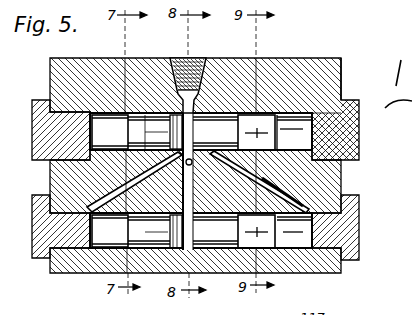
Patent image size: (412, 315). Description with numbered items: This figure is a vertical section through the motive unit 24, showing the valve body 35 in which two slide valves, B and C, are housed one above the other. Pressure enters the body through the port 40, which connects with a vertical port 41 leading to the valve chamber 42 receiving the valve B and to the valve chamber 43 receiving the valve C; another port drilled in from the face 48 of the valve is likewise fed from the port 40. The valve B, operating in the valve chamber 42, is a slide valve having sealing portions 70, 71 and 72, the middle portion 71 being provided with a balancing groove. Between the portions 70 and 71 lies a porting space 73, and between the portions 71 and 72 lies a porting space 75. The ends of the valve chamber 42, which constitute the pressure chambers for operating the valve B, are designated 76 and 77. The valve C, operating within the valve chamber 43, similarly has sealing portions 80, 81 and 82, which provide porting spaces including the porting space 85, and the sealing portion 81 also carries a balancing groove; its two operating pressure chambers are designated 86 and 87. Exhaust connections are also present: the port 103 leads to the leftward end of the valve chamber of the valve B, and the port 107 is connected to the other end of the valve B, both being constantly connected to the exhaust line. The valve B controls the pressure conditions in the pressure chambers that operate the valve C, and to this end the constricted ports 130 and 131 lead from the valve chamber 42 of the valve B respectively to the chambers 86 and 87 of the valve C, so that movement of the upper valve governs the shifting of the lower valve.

The die assembly 24 is at (357, 50).
The valve body 35 is at (333, 80).
The port 40 is at (184, 160).
The vertical port 41 is at (291, 138).
The valve chamber 42 is at (212, 58).
The valve chamber 43 is at (149, 249).
The face of the valve 48 is at (50, 72).
The sealing portion 70 is at (101, 112).
The sealing portion 71 is at (171, 112).
The sealing portion 72 is at (291, 124).
The porting space 73 is at (152, 112).
The porting space 75 is at (219, 112).
The pressure chamber 76 is at (50, 128).
The pressure chamber 77 is at (306, 112).
The sealing portion 80 is at (108, 240).
The sealing portion 81 is at (157, 249).
The sealing portion 82 is at (265, 250).
The porting space 85 is at (212, 250).
The operating pressure chamber 86 is at (50, 228).
The operating pressure chamber 87 is at (292, 240).
The port 103 is at (106, 113).
The port 107 is at (260, 125).
The constricted port 130 is at (127, 183).
The constricted port 131 is at (194, 181).